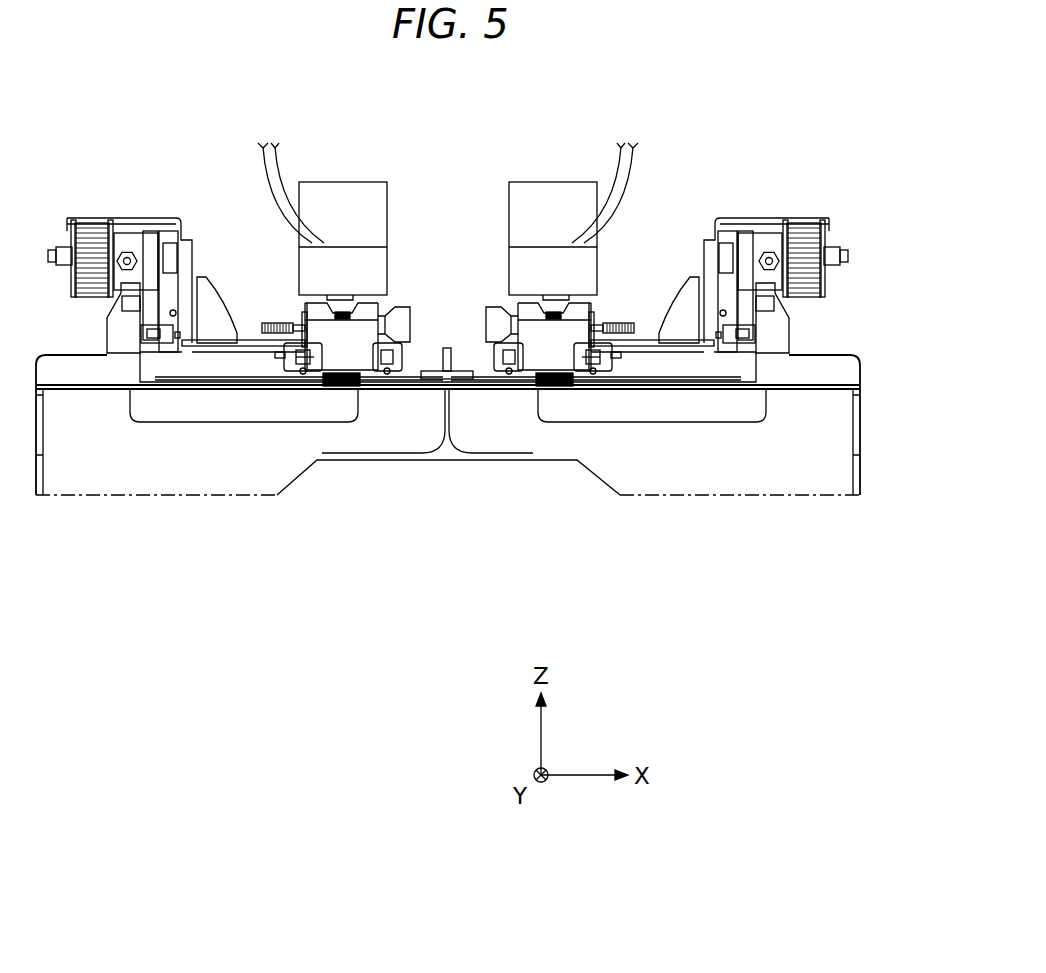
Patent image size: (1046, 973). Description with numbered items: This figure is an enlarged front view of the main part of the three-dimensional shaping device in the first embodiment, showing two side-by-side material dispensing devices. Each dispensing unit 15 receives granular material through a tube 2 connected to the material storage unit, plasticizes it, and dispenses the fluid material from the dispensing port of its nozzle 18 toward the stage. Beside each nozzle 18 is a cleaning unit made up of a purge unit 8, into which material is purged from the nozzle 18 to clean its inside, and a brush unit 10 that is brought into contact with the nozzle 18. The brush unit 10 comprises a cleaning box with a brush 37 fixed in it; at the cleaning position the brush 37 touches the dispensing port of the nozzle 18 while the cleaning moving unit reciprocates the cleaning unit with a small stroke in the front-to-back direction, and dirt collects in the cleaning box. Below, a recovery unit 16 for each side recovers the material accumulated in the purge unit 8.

The tube 2 is at (293, 185).
The purge unit 8 is at (313, 333).
The brush unit 10 is at (315, 318).
The dispensing unit 15 is at (336, 250).
The recovery unit 16 is at (180, 468).
The nozzle 18 is at (345, 318).
The brush 37 is at (348, 314).